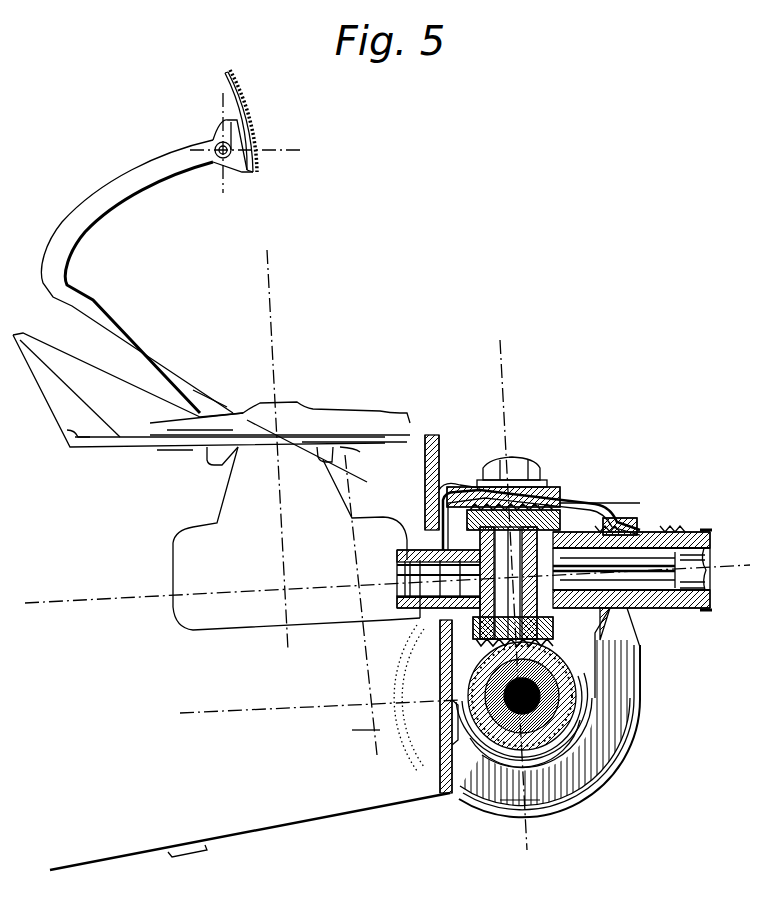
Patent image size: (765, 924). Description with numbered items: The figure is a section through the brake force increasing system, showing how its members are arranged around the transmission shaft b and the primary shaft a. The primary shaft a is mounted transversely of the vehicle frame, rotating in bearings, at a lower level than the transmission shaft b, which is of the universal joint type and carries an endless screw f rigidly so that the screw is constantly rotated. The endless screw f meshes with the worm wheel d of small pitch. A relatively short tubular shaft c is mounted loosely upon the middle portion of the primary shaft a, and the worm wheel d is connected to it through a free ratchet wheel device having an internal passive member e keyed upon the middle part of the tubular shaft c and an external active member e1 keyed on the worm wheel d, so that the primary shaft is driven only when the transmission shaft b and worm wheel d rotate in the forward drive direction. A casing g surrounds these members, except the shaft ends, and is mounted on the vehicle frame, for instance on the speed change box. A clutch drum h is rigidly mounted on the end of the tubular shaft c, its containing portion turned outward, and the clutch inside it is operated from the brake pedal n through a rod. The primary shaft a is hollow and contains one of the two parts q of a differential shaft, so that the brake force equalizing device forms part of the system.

The brake pedal n is at (252, 134).
The endless screw f is at (480, 490).
The transmission shaft b is at (580, 513).
The casing g is at (617, 673).
The clutch drum h is at (617, 737).
The differential shaft part q is at (607, 760).
The tubular shaft c is at (560, 787).
The primary shaft a is at (593, 763).
The worm wheel d is at (473, 730).
The internal passive member e is at (496, 807).
The external active member e1 is at (460, 797).